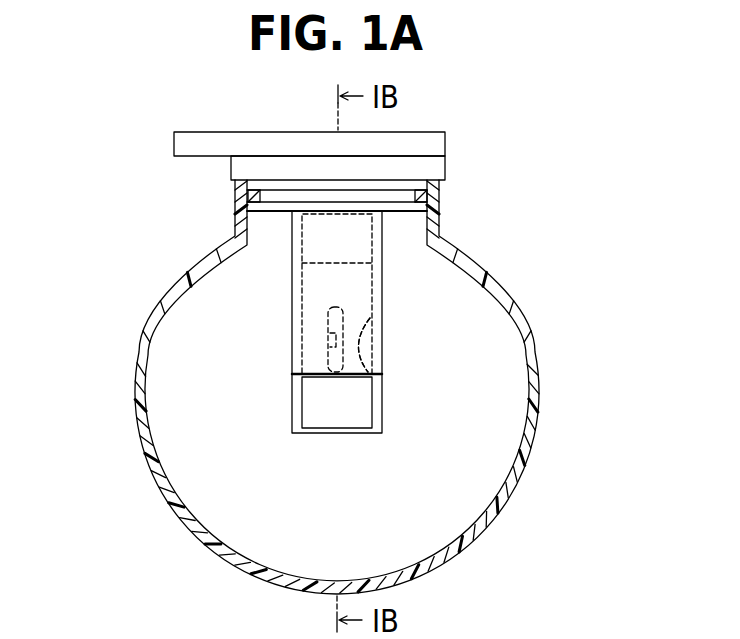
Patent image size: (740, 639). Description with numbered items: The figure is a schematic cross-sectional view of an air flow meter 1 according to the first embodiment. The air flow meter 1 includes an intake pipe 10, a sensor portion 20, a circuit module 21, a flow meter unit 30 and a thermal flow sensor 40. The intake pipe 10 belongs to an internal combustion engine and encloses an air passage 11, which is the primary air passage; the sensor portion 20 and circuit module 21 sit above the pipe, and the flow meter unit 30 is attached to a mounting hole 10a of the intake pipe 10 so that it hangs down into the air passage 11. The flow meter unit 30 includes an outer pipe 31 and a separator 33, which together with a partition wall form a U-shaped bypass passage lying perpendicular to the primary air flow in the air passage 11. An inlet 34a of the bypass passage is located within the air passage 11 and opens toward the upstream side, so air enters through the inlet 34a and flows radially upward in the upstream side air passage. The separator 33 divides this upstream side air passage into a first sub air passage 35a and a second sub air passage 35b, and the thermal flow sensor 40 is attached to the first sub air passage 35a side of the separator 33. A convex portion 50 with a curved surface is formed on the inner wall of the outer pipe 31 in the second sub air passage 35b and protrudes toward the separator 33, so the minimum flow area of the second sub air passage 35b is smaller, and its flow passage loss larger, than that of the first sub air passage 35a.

The air flow meter 1 is at (510, 529).
The intake pipe 10 is at (150, 472).
The mounting hole 10a is at (252, 199).
The air passage 11 is at (473, 395).
The sensor portion 20 is at (438, 120).
The circuit module 21 is at (452, 149).
The flow meter unit 30 is at (393, 279).
The outer pipe 31 is at (387, 410).
The separator 33 is at (345, 316).
The inlet 34a is at (320, 407).
The first sub air passage 35a is at (313, 357).
The second sub air passage 35b is at (350, 350).
The thermal flow sensor 40 is at (328, 340).
The convex portion 50 is at (355, 340).